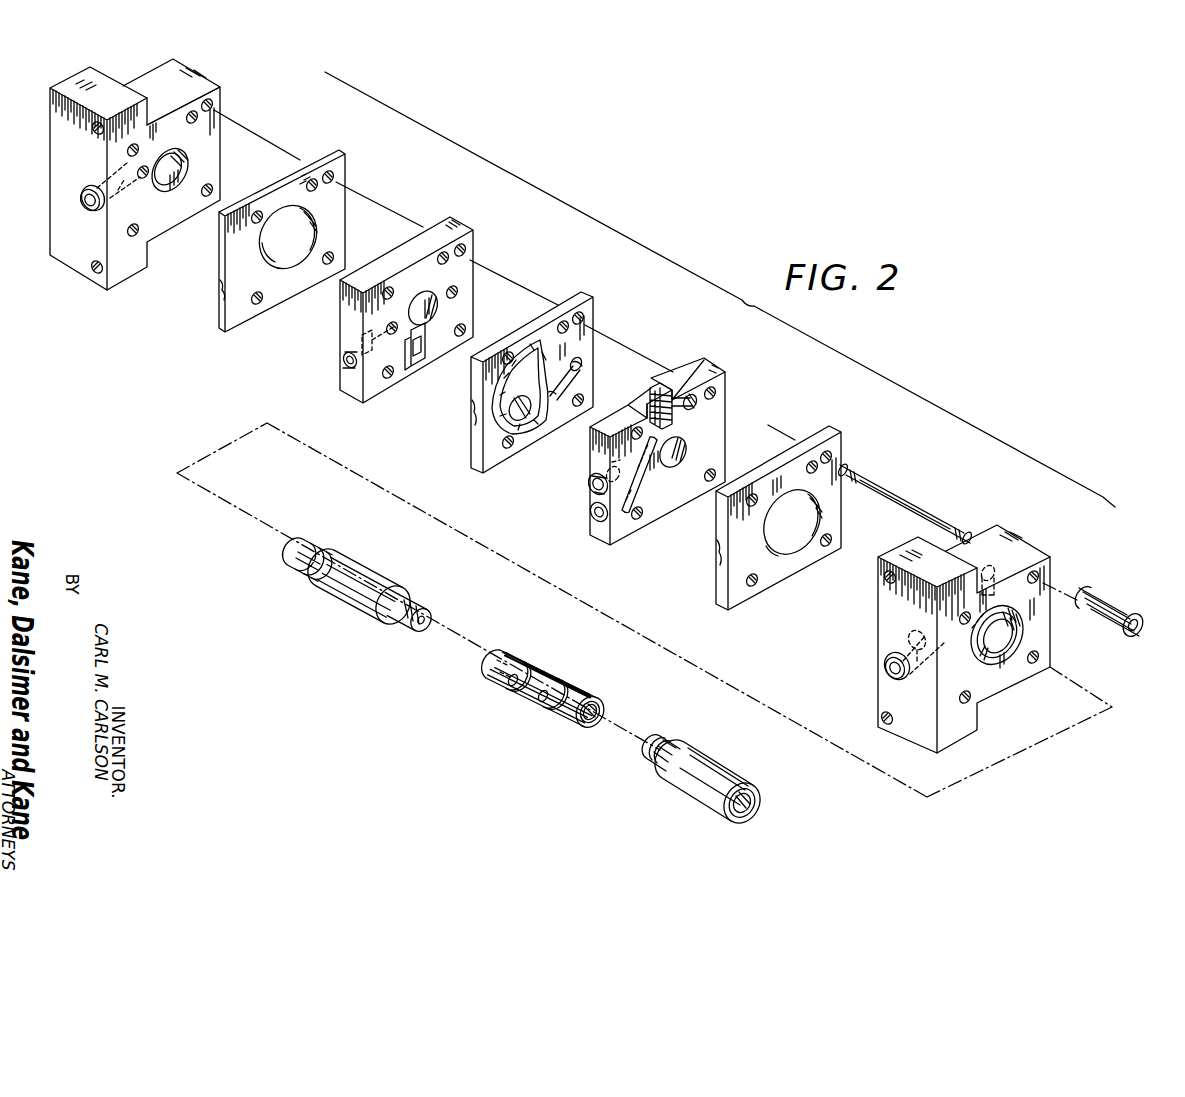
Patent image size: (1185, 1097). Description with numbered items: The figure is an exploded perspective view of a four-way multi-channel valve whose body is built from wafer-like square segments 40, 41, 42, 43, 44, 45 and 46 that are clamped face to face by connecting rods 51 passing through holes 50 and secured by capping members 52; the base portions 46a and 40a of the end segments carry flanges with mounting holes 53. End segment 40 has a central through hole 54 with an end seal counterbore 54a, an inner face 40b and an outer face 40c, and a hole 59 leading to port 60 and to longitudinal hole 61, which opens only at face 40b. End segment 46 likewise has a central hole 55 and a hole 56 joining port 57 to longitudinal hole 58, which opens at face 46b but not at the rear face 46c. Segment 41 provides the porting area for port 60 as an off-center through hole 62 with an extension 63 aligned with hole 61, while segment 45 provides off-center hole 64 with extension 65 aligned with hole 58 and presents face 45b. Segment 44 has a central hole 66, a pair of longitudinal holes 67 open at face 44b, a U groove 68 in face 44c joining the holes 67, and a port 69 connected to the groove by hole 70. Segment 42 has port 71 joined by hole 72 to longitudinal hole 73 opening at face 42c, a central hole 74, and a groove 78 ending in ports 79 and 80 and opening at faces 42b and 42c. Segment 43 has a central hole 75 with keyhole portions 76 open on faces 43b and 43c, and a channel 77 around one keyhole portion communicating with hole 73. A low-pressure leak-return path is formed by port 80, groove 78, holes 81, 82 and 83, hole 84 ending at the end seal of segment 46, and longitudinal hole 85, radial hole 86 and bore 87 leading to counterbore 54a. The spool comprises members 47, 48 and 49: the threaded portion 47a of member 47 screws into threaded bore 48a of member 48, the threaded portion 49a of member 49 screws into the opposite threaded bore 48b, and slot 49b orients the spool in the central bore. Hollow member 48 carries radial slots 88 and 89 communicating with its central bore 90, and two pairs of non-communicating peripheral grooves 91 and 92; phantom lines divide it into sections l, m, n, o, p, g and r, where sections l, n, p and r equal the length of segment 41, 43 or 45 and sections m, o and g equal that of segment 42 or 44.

The end segment 40 is at (998, 627).
The base portion 40a is at (945, 742).
The inner face 40b is at (988, 527).
The outer face 40c is at (1010, 677).
The segment 41 is at (788, 505).
The segment 42 is at (660, 432).
The face of segment 42 42b is at (725, 419).
The face of segment 42 42c is at (690, 365).
The segment 43 is at (556, 368).
The face of segment 43 43b is at (598, 331).
The face of segment 43 43c is at (568, 299).
The segment 44 is at (408, 297).
The face of segment 44 44b is at (474, 282).
The face of segment 44 44c is at (437, 225).
The segment 45 is at (310, 228).
The face of segment 45 45b is at (362, 194).
The end segment 46 is at (140, 174).
The base portion 46a is at (52, 90).
The face of segment 46 46b is at (213, 123).
The rear face 46c is at (146, 87).
The spool member 47 is at (704, 774).
The decreased diameter portion 47a is at (672, 748).
The spool member 48 is at (545, 709).
The threaded bore 48a is at (600, 700).
The end of sleeve 48b is at (490, 676).
The spool member 49 is at (371, 586).
The threaded decreased diameter portion 49a is at (429, 606).
The peripheral longitudinal slot 49b is at (300, 580).
The through holes 50 is at (213, 105).
The connecting rods 51 is at (923, 500).
The capping members 52 is at (1120, 614).
The through holes 53 is at (97, 136).
The central through hole 54 is at (1015, 616).
The end seal counterbore 54a is at (1022, 633).
The central through hole 55 is at (183, 158).
The hole 56 is at (124, 191).
The port 57 is at (89, 208).
The longitudinal hole 58 is at (147, 160).
The hole 59 is at (905, 675).
The port 60 is at (890, 690).
The longitudinal hole 61 is at (918, 628).
The through hole 62 is at (810, 521).
The extension 63 is at (770, 556).
The through hole 64 is at (306, 231).
The extension 65 is at (262, 247).
The central through hole 66 is at (412, 306).
The longitudinal cylindrical holes 67 is at (388, 322).
The U groove 68 is at (418, 366).
The port 69 is at (343, 364).
The cylindrical hole 70 is at (378, 372).
The port 71 is at (589, 490).
The cylindrical hole 72 is at (637, 475).
The longitudinal hole 73 is at (607, 472).
The central through hole 74 is at (687, 452).
The central through hole 75 is at (560, 377).
The keyhole portions 76 is at (566, 360).
The through channel 77 is at (544, 425).
The through groove 78 is at (693, 410).
The port 79 is at (592, 519).
The port 80 is at (667, 390).
The through hole 81 is at (816, 473).
The through hole 82 is at (559, 329).
The through hole 83 is at (438, 260).
The hole 84 is at (316, 190).
The longitudinal hole 85 is at (990, 564).
The radial hole 86 is at (996, 588).
The hole 87 is at (191, 123).
The radial slots 88 is at (510, 690).
The radial slots 89 is at (542, 705).
The central bore 90 is at (593, 728).
The grooves 91 is at (516, 655).
The grooves 92 is at (586, 682).
The cylindrical section l is at (492, 684).
The cylindrical section m is at (500, 690).
The cylindrical section n is at (515, 708).
The cylindrical section o is at (530, 704).
The cylindrical section p is at (552, 710).
The port g is at (556, 722).
The cylindrical section r is at (570, 730).